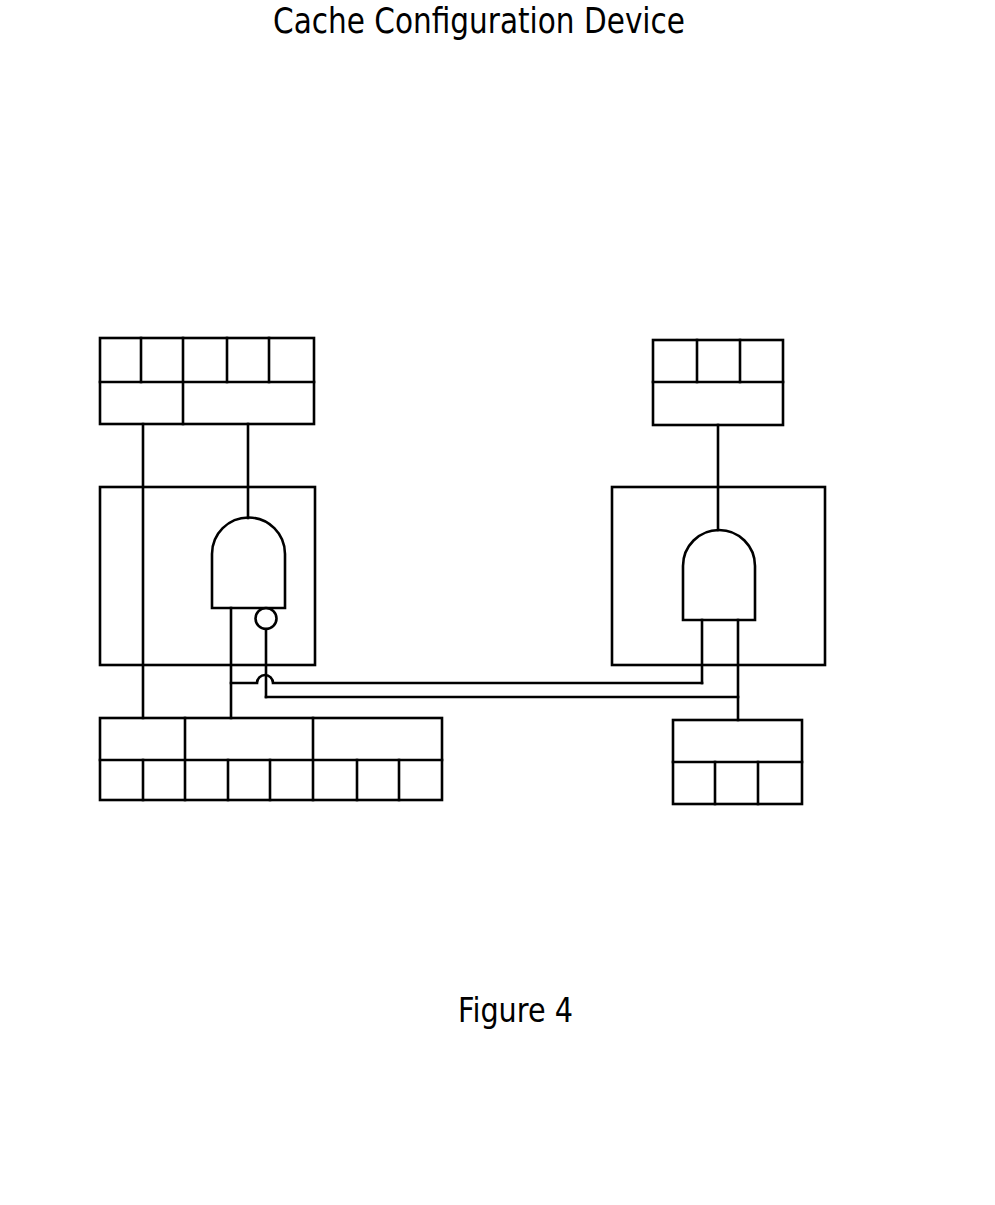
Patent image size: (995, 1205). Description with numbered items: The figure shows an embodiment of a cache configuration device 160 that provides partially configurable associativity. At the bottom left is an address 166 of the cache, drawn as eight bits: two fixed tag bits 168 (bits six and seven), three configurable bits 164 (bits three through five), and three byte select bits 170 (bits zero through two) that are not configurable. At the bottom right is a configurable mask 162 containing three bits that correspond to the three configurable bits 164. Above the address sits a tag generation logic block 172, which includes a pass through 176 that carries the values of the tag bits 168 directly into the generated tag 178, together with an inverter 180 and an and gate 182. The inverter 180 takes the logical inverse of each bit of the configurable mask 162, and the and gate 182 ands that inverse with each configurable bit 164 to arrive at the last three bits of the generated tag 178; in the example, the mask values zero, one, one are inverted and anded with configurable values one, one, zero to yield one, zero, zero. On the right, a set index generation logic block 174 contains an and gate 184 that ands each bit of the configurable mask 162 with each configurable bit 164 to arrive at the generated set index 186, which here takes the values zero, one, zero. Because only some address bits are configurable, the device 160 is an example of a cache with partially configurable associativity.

The cache configuration device 160 is at (690, 123).
The configurable mask 162 is at (802, 784).
The configurable bits 164 is at (218, 718).
The address 166 is at (100, 778).
The tag bits 168 is at (122, 718).
The byte select bits 170 is at (442, 740).
The tag generation logic block 172 is at (315, 507).
The set index generation logic block 174 is at (612, 528).
The pass through 176 is at (143, 625).
The generated tag 178 is at (100, 358).
The inverter 180 is at (277, 618).
The and gate 182 is at (226, 527).
The and gate 184 is at (741, 536).
The generated set index 186 is at (783, 360).